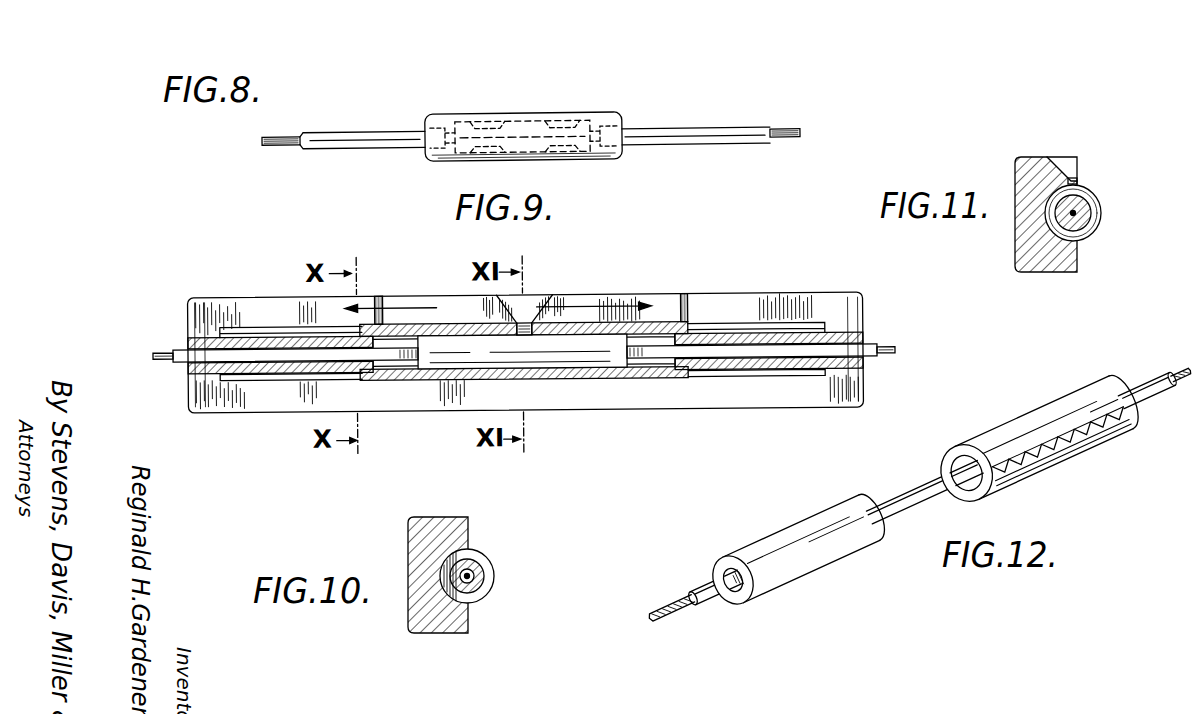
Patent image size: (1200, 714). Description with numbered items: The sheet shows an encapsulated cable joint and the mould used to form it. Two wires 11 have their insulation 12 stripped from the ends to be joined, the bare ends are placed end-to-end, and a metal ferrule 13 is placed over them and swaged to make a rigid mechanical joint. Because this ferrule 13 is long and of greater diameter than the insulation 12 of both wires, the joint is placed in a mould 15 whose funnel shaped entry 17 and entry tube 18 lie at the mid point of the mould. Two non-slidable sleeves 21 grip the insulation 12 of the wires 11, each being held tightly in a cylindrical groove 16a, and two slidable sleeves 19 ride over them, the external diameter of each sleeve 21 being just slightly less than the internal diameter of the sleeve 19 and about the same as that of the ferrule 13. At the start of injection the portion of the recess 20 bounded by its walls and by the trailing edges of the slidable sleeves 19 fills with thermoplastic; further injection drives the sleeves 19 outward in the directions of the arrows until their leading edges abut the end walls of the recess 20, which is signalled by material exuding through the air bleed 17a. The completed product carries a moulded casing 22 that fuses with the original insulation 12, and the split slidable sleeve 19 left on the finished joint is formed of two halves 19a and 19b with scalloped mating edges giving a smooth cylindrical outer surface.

In FIG. 8, the wires 11 is at (292, 130).
In FIG. 9, the wires 11 is at (160, 350).
In FIG. 10, the wires 11 is at (470, 580).
In FIG. 11, the wires 11 is at (1075, 216).
In FIG. 12, the wires 11 is at (670, 602).
In FIG. 8, the insulation 12 is at (355, 128).
In FIG. 9, the insulation 12 is at (180, 345).
In FIG. 10, the insulation 12 is at (486, 577).
In FIG. 12, the insulation 12 is at (705, 585).
In FIG. 8, the metal ferrule 13 is at (538, 128).
In FIG. 9, the metal ferrule 13 is at (462, 352).
In FIG. 10, the metal ferrule 13 is at (485, 572).
In FIG. 11, the metal ferrule 13 is at (1085, 224).
In FIG. 9, the mould 15 is at (203, 305).
In FIG. 10, the mould 15 is at (441, 525).
In FIG. 11, the mould 15 is at (1035, 170).
In FIG. 9, the cylindrical groove 16a is at (212, 340).
In FIG. 9, the funnel shaped entry 17 is at (535, 300).
In FIG. 11, the funnel shaped entry 17 is at (1070, 170).
In FIG. 9, the air bleed 17a is at (381, 300).
In FIG. 9, the entry tube 18 is at (532, 322).
In FIG. 11, the entry tube 18 is at (1078, 182).
In FIG. 9, the slidable sleeve 19 is at (408, 330).
In FIG. 10, the slidable sleeve 19 is at (478, 556).
In FIG. 11, the slidable sleeve 19 is at (1100, 216).
In FIG. 12, the slidable sleeve 19 is at (1044, 423).
In FIG. 12, the sleeve half 19a is at (1050, 426).
In FIG. 12, the sleeve half 19b is at (1060, 446).
In FIG. 9, the recess 20 is at (270, 378).
In FIG. 9, the non-slidable sleeve 21 is at (255, 340).
In FIG. 8, the casing 22 is at (446, 118).
In FIG. 12, the casing 22 is at (763, 548).